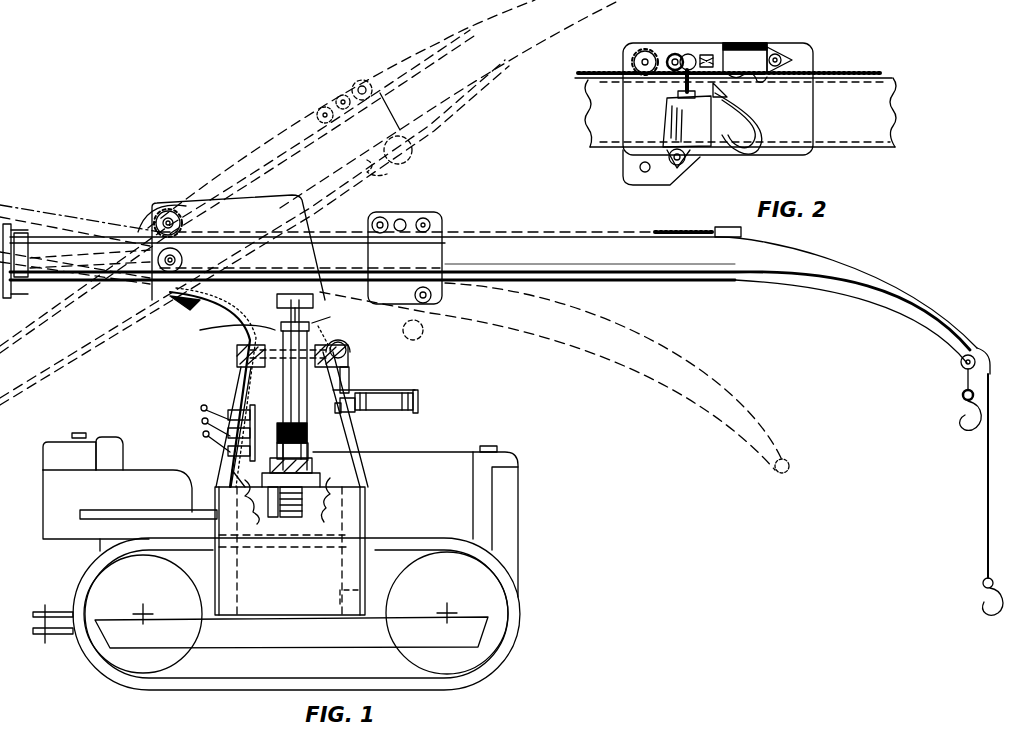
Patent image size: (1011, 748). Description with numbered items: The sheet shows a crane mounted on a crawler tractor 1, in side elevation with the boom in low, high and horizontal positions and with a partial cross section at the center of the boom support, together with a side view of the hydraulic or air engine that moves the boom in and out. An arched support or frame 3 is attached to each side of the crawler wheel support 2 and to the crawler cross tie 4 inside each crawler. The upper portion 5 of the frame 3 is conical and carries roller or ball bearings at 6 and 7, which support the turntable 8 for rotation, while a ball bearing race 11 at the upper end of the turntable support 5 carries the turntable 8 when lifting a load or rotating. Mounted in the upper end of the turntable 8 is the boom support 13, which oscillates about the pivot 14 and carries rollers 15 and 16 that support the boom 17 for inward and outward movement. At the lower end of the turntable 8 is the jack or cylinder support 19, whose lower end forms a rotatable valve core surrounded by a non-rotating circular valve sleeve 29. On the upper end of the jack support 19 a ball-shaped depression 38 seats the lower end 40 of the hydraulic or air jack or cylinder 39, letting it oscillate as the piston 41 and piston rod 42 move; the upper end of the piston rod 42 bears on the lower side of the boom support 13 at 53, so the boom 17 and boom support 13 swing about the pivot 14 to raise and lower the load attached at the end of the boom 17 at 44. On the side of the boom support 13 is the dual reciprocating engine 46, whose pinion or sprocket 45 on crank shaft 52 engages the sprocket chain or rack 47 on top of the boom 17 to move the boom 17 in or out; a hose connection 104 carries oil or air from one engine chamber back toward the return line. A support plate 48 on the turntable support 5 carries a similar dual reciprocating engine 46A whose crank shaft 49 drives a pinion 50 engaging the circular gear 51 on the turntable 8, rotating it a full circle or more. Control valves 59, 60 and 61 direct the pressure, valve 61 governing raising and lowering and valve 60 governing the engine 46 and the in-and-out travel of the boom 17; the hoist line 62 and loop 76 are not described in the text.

In FIG. 1, the crawler tractor 1 is at (512, 562).
In FIG. 1, the crawler wheel support 2 is at (490, 632).
In FIG. 1, the arched support or frame 3 is at (366, 510).
In FIG. 1, the crawler cross tie 4 is at (356, 598).
In FIG. 1, the upper portion of arch support 5 is at (352, 449).
In FIG. 1, the roller or ball bearing 6 is at (236, 376).
In FIG. 1, the roller or ball bearing 7 is at (240, 487).
In FIG. 1, the turntable 8 is at (186, 304).
In FIG. 1, the ball bearing race 11 is at (240, 357).
In FIG. 1, the boom support 13 is at (262, 149).
In FIG. 1, the pivot 14 is at (150, 260).
In FIG. 1, the roller 15 is at (170, 208).
In FIG. 1, the roller 16 is at (432, 298).
In FIG. 2, the roller 16 is at (632, 152).
In FIG. 1, the boom 17 is at (735, 280).
In FIG. 1, the jack or cylinder support 19 is at (296, 500).
In FIG. 1, the circular valve sleeve 29 is at (272, 520).
In FIG. 1, the ball-shaped depression 38 is at (322, 495).
In FIG. 1, the hydraulic or air jack or cylinder 39 is at (282, 390).
In FIG. 1, the lower end of jack or cylinder 40 is at (312, 452).
In FIG. 1, the piston 41 is at (306, 436).
In FIG. 1, the piston rod 42 is at (245, 328).
In FIG. 1, the end of boom 44 is at (960, 372).
In FIG. 1, the pinion or sprocket 45 is at (398, 216).
In FIG. 2, the pinion or sprocket 45 is at (672, 52).
In FIG. 1, the dual reciprocating engine 46 is at (352, 214).
In FIG. 2, the dual reciprocating engine 46 is at (700, 137).
In FIG. 1, the dual reciprocating engine 46A is at (372, 418).
In FIG. 1, the sprocket chain or rack 47 is at (572, 232).
In FIG. 2, the sprocket chain or rack 47 is at (845, 76).
In FIG. 1, the support plate 48 is at (416, 400).
In FIG. 1, the crank shaft 49 is at (349, 380).
In FIG. 1, the pinion 50 is at (350, 352).
In FIG. 1, the circular gear 51 is at (328, 336).
In FIG. 2, the crank shaft 52 is at (698, 50).
In FIG. 1, the contact point 53 is at (298, 302).
In FIG. 1, the control valve 59 is at (203, 436).
In FIG. 1, the control valve 60 is at (202, 422).
In FIG. 1, the control valve 61 is at (201, 408).
In FIG. 1, the hoist cable 62 is at (985, 500).
In FIG. 2, the loop hose 76 is at (793, 140).
In FIG. 2, the hose connection 104 is at (752, 155).